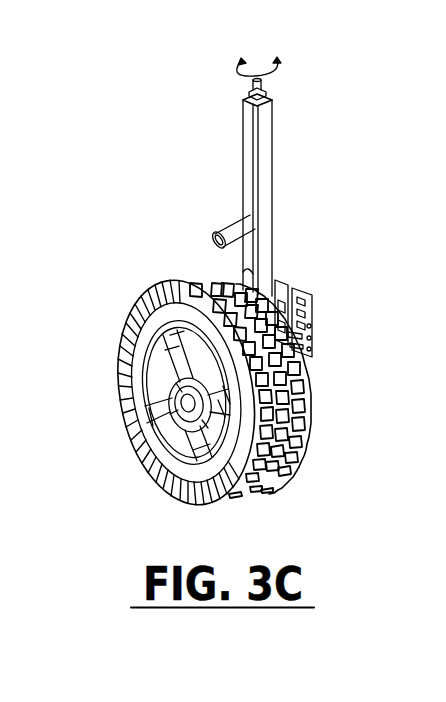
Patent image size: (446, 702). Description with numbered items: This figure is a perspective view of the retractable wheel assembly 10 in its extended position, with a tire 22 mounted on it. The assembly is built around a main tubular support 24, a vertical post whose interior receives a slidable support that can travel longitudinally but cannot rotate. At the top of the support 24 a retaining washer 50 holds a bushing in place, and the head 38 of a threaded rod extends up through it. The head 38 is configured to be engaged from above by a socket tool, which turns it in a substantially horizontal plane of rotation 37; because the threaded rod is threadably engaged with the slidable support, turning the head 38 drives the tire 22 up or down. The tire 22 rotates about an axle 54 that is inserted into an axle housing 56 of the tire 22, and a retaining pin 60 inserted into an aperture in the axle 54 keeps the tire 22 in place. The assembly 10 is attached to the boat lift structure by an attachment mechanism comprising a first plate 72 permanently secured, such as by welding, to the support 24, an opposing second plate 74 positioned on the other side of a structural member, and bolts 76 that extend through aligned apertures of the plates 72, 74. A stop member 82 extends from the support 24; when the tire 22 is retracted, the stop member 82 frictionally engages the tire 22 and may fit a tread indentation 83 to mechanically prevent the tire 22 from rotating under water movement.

The retractable wheel assembly 10 is at (82, 236).
The tire 22 is at (313, 438).
The main tubular support 24 is at (266, 134).
The horizontal plane of rotation 37 is at (281, 58).
The head 38 is at (262, 78).
The retaining washer 50 is at (242, 96).
The axle 54 is at (202, 492).
The axle housing 56 is at (190, 402).
The retaining pin 60 is at (150, 392).
The first plate 72 is at (277, 281).
The second plate 74 is at (294, 292).
The bolts 76 is at (305, 347).
The stop member 82 is at (229, 226).
The tread indentation 83 is at (196, 283).